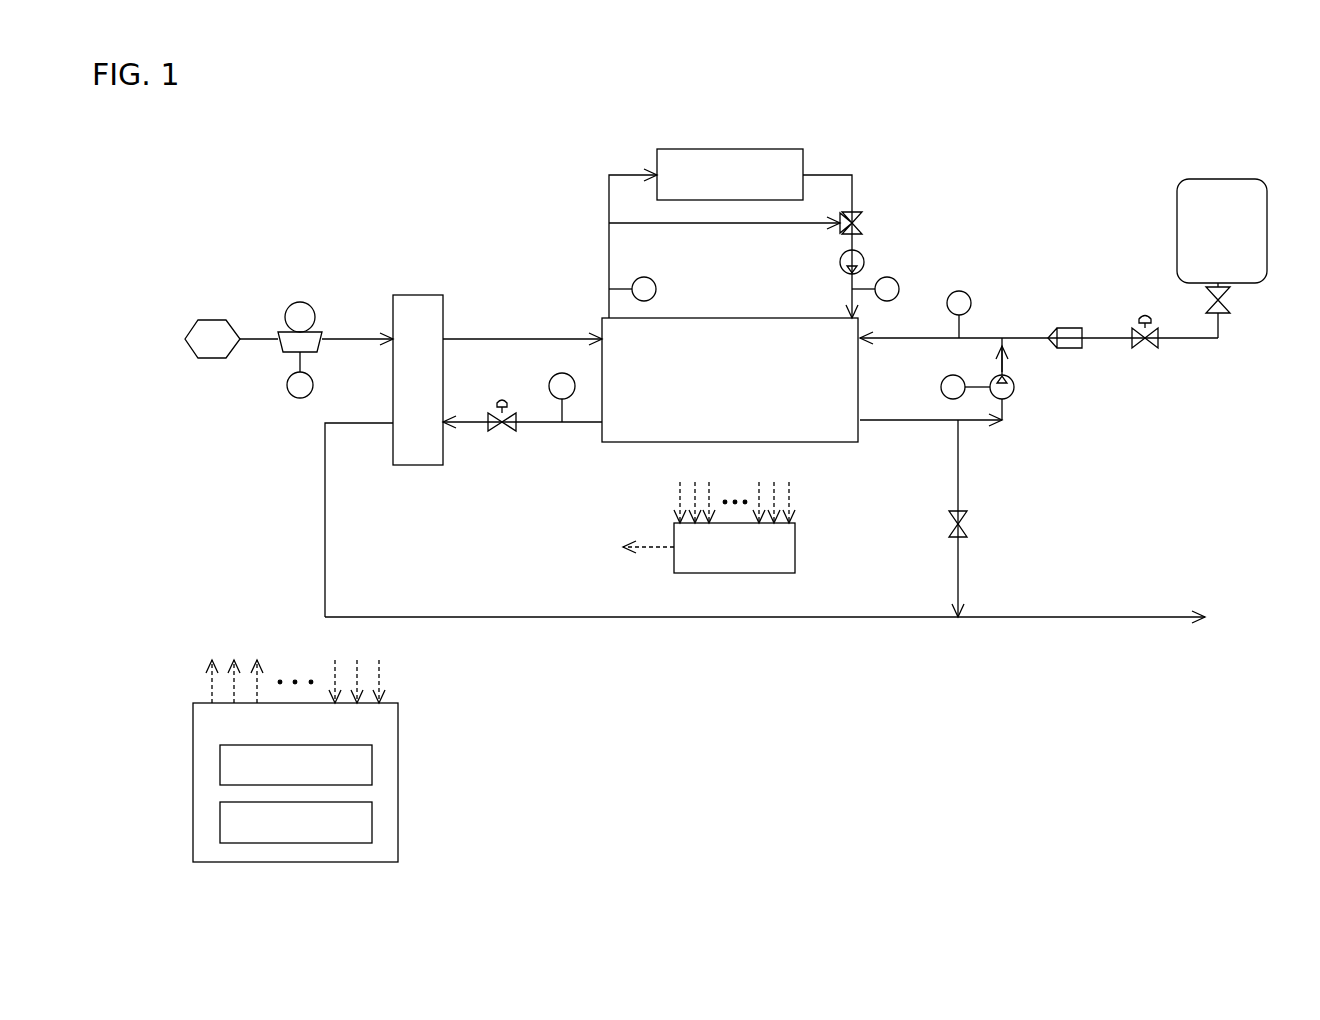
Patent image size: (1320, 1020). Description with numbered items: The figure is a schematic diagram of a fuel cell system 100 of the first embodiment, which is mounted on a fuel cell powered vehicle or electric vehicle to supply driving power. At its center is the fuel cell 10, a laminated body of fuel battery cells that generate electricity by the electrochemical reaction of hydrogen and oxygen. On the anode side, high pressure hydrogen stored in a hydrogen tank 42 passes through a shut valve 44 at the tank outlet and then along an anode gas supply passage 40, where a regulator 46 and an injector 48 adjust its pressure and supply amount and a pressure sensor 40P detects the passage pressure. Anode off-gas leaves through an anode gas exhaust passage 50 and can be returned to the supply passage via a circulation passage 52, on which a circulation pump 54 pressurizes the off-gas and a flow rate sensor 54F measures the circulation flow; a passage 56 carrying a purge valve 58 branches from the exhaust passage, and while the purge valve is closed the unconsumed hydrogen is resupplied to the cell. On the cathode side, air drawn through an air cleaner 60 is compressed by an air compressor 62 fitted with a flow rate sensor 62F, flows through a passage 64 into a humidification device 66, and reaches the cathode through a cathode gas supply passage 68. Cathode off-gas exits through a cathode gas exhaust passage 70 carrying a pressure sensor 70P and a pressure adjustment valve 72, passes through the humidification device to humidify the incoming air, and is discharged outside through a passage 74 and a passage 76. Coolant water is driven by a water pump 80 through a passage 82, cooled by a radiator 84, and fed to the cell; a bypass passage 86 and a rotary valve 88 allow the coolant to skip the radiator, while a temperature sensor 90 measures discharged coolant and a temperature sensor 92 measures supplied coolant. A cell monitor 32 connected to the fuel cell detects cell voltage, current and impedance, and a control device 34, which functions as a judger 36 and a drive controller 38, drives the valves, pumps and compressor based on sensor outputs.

The fuel cell system 100 is at (1122, 146).
The fuel cell 10 is at (728, 318).
The cell monitor 32 is at (795, 547).
The control device 34 is at (398, 720).
The judger 36 is at (372, 763).
The drive controller 38 is at (372, 820).
The anode gas supply passage 40 is at (1022, 335).
The pressure sensor 40P is at (959, 291).
The hydrogen tank 42 is at (1177, 222).
The shut valve 44 is at (1232, 304).
The regulator 46 is at (1145, 315).
The injector 48 is at (1068, 328).
The anode gas exhaust passage 50 is at (896, 423).
The circulation passage 52 is at (1006, 412).
The circulation pump 54 is at (1014, 387).
The flow rate sensor 54F is at (941, 387).
The passage 56 is at (960, 472).
The purge valve 58 is at (967, 526).
The air cleaner 60 is at (214, 318).
The air compressor 62 is at (301, 301).
The flow rate sensor 62F is at (300, 398).
The passage 64 is at (356, 335).
The humidification device 66 is at (419, 295).
The cathode gas supply passage 68 is at (513, 335).
The cathode gas exhaust passage 70 is at (537, 425).
The pressure sensor 70P is at (558, 373).
The pressure adjustment valve 72 is at (498, 402).
The passage 74 is at (325, 526).
The passage 76 is at (1070, 615).
The water pump 80 is at (863, 257).
The passage 82 is at (609, 251).
The radiator 84 is at (727, 149).
The bypass passage 86 is at (777, 226).
The rotary valve 88 is at (862, 212).
The temperature sensor 90 is at (656, 283).
The temperature sensor 92 is at (898, 282).